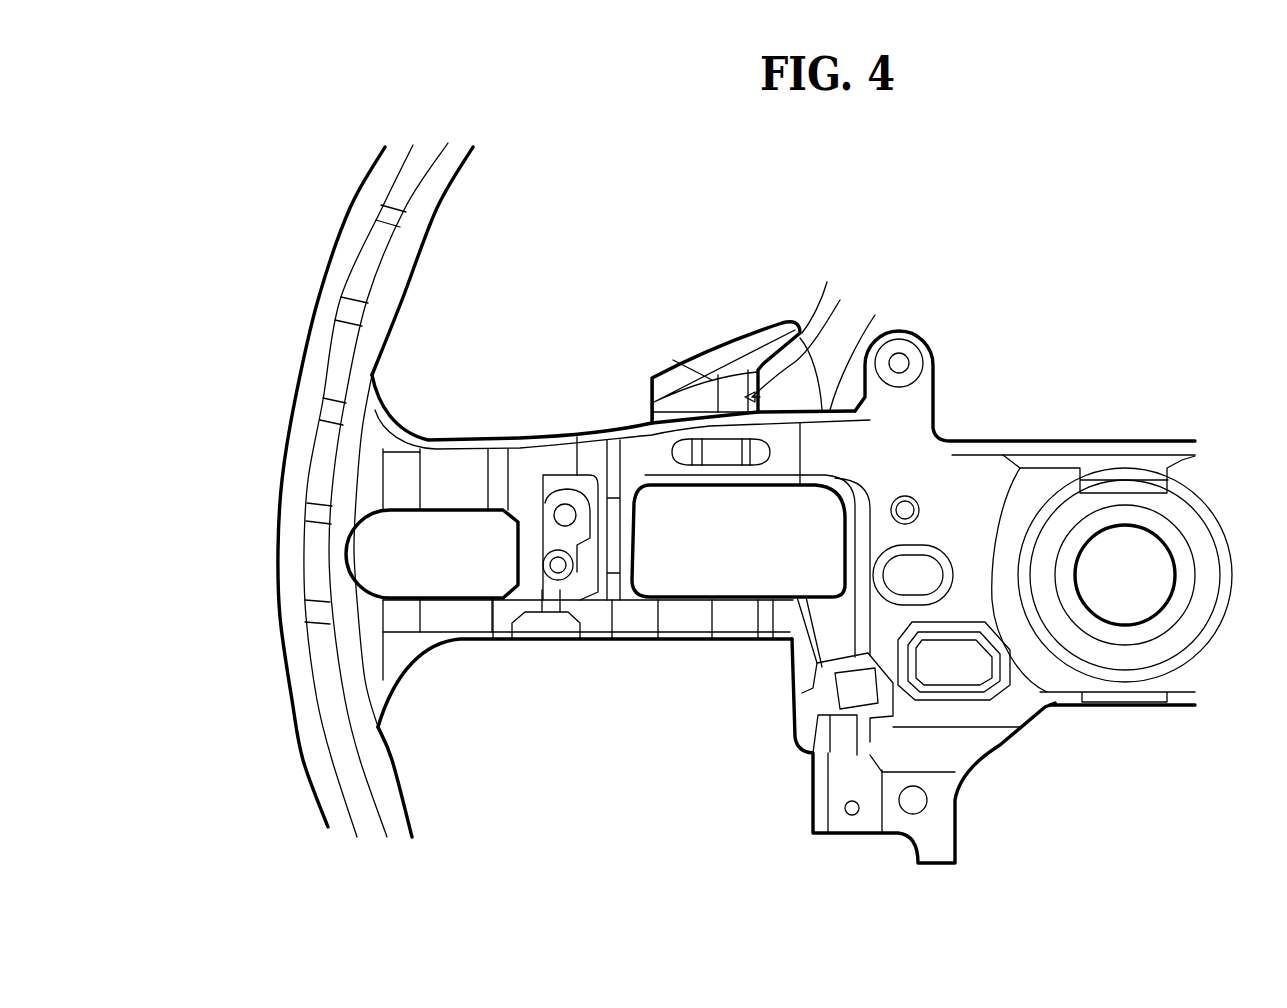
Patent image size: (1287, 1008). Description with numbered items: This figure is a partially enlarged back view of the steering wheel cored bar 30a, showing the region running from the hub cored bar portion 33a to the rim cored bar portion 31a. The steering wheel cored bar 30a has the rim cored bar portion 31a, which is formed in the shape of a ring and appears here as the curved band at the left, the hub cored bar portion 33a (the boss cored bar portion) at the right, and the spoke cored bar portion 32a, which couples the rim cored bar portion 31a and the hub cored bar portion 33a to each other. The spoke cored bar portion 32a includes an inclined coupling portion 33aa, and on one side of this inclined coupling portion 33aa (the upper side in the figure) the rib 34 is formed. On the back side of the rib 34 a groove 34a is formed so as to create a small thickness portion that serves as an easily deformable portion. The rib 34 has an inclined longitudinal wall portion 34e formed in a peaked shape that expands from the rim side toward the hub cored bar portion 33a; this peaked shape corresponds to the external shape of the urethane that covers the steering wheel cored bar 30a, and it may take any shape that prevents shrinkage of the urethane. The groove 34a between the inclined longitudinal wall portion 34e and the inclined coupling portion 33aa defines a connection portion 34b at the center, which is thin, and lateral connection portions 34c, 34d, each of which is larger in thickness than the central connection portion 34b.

The steering wheel cored bar 30a is at (288, 257).
The rim cored bar portion 31a is at (457, 192).
The spoke cored bar portion 32a is at (420, 434).
The hub cored bar portion 33a is at (1098, 705).
The inclined coupling portion 33aa is at (862, 336).
The rib 34 is at (746, 316).
The groove 34a is at (875, 315).
The connection portion 34b is at (713, 393).
The lateral connection portion 34c is at (657, 412).
The lateral connection portion 34d is at (840, 300).
The inclined longitudinal wall portion 34e is at (827, 282).